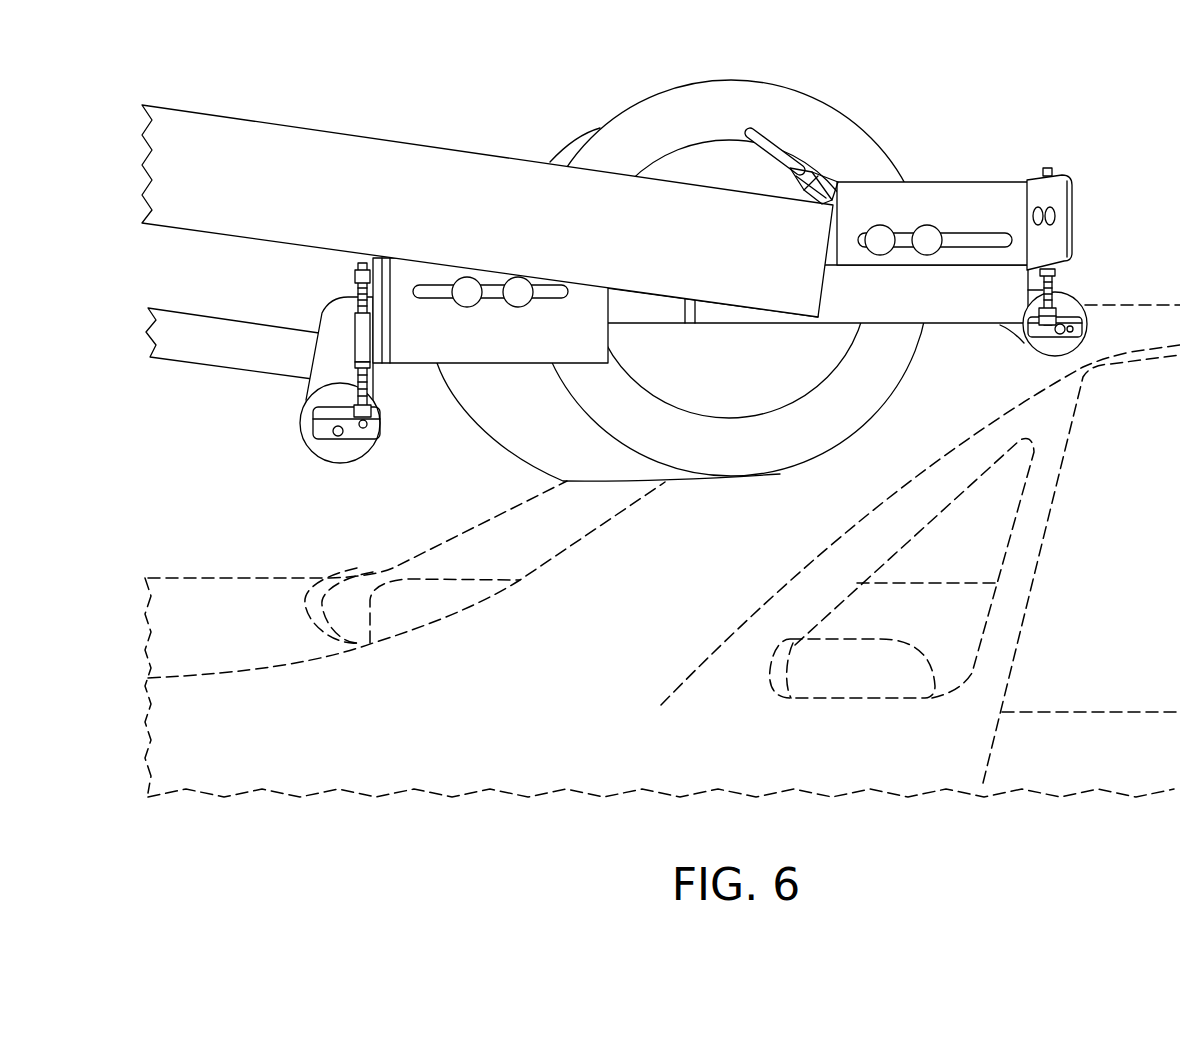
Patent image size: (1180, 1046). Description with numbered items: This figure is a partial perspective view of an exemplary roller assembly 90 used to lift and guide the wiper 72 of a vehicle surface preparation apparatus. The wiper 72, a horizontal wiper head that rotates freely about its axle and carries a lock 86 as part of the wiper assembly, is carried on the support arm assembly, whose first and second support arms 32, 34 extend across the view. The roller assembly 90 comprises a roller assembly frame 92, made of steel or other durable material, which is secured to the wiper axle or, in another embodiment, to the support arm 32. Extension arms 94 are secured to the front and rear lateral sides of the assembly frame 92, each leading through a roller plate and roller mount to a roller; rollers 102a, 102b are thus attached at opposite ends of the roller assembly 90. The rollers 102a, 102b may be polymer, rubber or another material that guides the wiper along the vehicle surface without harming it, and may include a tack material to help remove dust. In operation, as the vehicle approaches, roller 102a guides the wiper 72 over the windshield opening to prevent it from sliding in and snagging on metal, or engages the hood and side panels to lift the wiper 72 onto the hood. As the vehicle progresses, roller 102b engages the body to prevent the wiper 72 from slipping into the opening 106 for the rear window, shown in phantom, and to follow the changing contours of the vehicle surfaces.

The first support arm 32 is at (420, 143).
The second support arm 34 is at (167, 363).
The wiper 72 is at (698, 79).
The lock 86 is at (767, 126).
The roller assembly 90 is at (1030, 138).
The roller assembly frame 92 is at (643, 313).
The extension arm 94 is at (492, 365).
The roller 102a is at (306, 388).
The roller 102b is at (1083, 303).
The opening for the rear window 106 is at (492, 526).